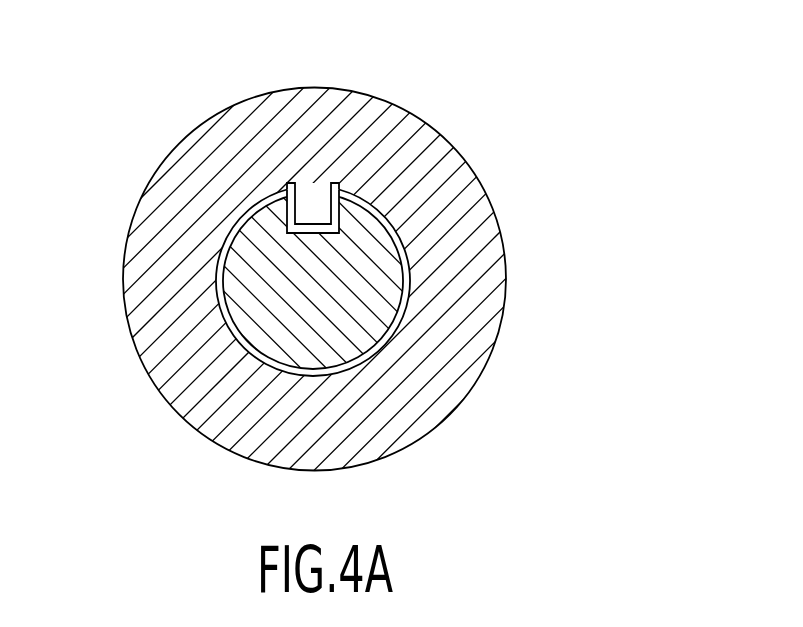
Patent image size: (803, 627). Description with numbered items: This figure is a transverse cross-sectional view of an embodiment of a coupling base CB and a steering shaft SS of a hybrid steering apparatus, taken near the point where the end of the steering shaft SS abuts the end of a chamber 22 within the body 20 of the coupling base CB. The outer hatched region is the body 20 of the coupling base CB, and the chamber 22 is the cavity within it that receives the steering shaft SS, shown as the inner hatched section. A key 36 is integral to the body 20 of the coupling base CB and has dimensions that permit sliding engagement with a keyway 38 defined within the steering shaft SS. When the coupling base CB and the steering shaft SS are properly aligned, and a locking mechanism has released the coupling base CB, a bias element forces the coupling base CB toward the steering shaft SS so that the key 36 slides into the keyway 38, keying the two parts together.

The body 20 is at (472, 170).
The chamber 22 is at (393, 328).
The key 36 is at (313, 205).
The keyway 38 is at (288, 217).
The steering shaft SS is at (360, 230).
The coupling base CB is at (600, 190).